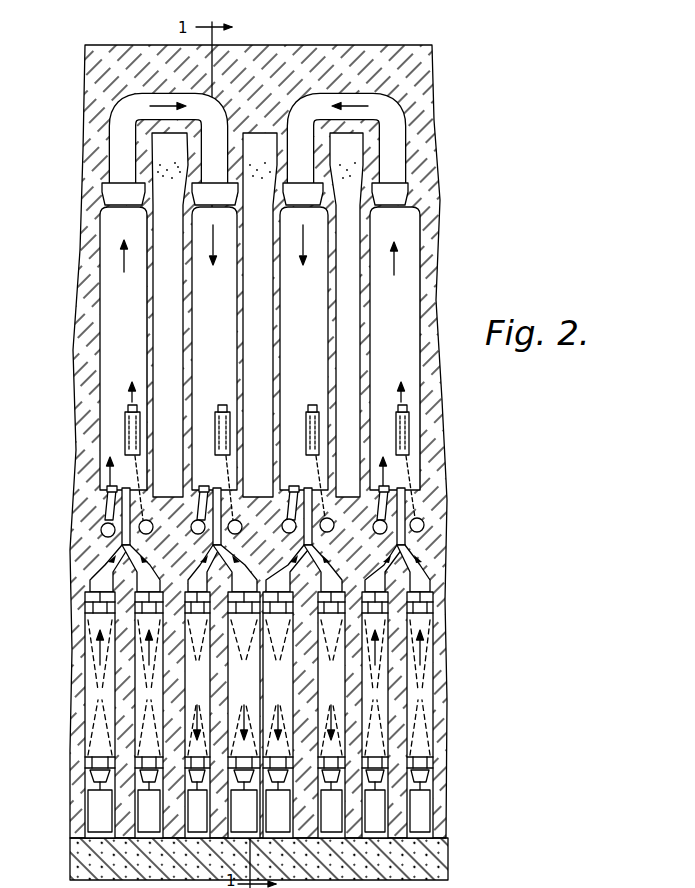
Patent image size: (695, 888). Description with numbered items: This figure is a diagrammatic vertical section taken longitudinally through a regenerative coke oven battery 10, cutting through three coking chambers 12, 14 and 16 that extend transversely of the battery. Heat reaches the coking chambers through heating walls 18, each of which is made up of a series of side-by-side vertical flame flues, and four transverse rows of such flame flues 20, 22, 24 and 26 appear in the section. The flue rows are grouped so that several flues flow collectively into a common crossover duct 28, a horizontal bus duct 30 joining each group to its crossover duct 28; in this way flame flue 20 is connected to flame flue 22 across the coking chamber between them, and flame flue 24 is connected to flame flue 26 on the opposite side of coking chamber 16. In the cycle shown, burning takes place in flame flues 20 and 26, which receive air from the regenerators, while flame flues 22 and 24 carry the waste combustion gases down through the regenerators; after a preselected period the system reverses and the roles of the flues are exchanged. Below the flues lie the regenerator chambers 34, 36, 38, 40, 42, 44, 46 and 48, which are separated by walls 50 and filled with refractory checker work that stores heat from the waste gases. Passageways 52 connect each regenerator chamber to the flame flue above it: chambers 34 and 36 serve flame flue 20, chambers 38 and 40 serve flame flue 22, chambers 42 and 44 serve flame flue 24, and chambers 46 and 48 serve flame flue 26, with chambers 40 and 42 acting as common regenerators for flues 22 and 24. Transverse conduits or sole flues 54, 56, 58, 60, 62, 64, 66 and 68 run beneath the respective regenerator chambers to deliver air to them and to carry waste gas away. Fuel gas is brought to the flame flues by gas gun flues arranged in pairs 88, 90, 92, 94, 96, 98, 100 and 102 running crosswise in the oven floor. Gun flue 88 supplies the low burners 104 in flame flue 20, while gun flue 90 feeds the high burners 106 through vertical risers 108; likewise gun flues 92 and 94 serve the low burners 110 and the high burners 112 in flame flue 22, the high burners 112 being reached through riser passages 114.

The regenerative coke oven battery 10 is at (457, 246).
The coking chamber 12 is at (182, 286).
The coking chamber 14 is at (272, 280).
The coking chamber 16 is at (362, 280).
The heating wall 18 is at (148, 308).
The vertical flame flue 20 is at (135, 352).
The vertical flame flue 22 is at (225, 354).
The vertical flame flue 24 is at (314, 358).
The vertical flame flue 26 is at (407, 363).
The crossover duct 28 is at (142, 98).
The horizontal bus duct 30 is at (112, 192).
The regenerator chamber 34 is at (108, 753).
The regenerator chamber 36 is at (158, 753).
The regenerator chamber 38 is at (206, 753).
The regenerator chamber 40 is at (253, 753).
The regenerator chamber 42 is at (287, 753).
The regenerator chamber 44 is at (340, 753).
The regenerator chamber 46 is at (383, 753).
The regenerator chamber 48 is at (428, 753).
The wall 50 is at (215, 715).
The passageway 52 is at (92, 574).
The sole flue 54 is at (100, 811).
The sole flue 56 is at (149, 811).
The sole flue 58 is at (197, 811).
The sole flue 60 is at (244, 811).
The sole flue 62 is at (278, 811).
The sole flue 64 is at (331, 811).
The sole flue 66 is at (375, 811).
The sole flue 68 is at (420, 811).
The gun flue 88 is at (101, 530).
The gun flue 90 is at (151, 521).
The gun flue 92 is at (194, 533).
The gun flue 94 is at (240, 518).
The gun flue 96 is at (286, 532).
The gun flue 98 is at (331, 519).
The gun flue 100 is at (386, 492).
The gun flue 102 is at (424, 523).
The low burner 104 is at (108, 492).
The high burner 106 is at (138, 410).
The vertical riser 108 is at (132, 460).
The low burner 110 is at (203, 489).
The high burner 112 is at (216, 363).
The riser passage 114 is at (236, 470).